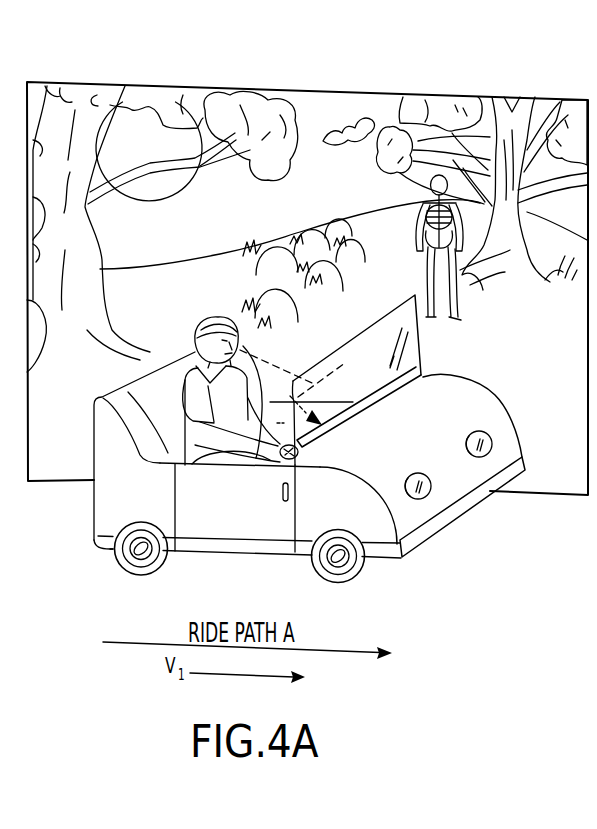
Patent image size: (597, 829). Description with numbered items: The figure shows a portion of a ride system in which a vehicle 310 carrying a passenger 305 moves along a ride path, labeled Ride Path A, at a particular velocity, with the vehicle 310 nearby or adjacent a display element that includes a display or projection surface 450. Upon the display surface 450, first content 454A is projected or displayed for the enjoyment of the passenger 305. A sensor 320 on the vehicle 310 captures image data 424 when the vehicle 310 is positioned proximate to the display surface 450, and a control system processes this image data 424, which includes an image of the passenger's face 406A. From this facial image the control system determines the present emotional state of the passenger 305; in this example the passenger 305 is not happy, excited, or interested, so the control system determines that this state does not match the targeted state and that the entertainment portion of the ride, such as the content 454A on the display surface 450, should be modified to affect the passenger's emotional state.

The display or projection surface 450 is at (292, 90).
The content 454A is at (443, 103).
The passenger's face 406A is at (201, 330).
The passenger 305 is at (157, 366).
The vehicle 310 is at (488, 392).
The sensor 320 is at (403, 380).
The image data 424 is at (352, 380).